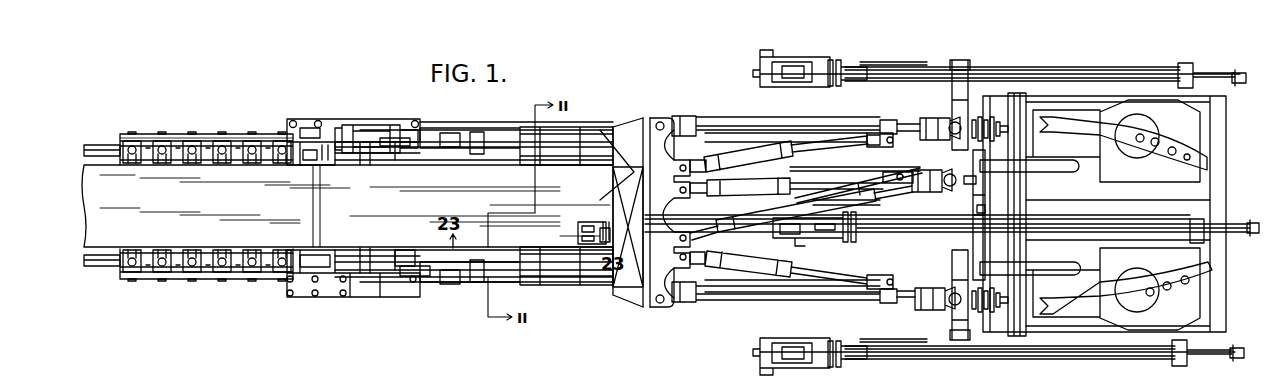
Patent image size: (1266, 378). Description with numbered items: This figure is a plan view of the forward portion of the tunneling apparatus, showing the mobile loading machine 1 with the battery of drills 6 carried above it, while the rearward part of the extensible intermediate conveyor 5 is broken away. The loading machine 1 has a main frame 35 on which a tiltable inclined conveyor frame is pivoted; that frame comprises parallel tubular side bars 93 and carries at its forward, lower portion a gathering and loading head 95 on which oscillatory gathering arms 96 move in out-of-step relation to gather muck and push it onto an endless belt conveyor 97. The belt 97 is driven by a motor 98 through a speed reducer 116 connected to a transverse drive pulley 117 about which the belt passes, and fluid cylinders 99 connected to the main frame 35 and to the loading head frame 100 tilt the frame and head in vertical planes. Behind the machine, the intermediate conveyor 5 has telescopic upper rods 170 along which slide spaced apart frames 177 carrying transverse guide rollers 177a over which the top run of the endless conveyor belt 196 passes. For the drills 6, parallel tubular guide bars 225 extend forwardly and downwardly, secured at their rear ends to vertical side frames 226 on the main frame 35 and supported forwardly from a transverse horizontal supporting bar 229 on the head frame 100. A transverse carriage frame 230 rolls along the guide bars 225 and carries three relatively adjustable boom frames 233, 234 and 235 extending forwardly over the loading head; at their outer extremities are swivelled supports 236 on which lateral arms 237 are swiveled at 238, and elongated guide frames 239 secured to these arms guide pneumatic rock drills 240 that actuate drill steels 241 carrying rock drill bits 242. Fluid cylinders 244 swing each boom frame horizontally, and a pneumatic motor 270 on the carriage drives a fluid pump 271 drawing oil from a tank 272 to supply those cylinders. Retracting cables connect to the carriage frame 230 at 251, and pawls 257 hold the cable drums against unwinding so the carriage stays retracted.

The mobile loading machine 1 is at (633, 123).
The extensible intermediate conveyor 5 is at (205, 126).
The battery of drills 6 is at (1020, 62).
The main frame 35 is at (272, 286).
The tubular side members or side bars 93 is at (432, 257).
The gathering and loading head 95 is at (1218, 193).
The oscillatory gathering arms 96 is at (1167, 144).
The endless belt conveyor 97 is at (396, 256).
The motor 98 is at (372, 128).
The fluid cylinders 99 is at (808, 134).
The loading head frame 100 is at (1064, 100).
The speed reducer 116 is at (325, 150).
The transverse drive pulley 117 is at (318, 158).
The upper telescopic tubular side members or rods 170 is at (95, 264).
The spaced apart frames 177 is at (268, 273).
The transverse guide rollers 177a is at (252, 143).
The endless conveyor belt 196 is at (86, 215).
The tubular guide members or bars 225 is at (480, 140).
The vertical side frames 226 is at (452, 135).
The transverse horizontal supporting bar 229 is at (1022, 308).
The transverse carriage frame 230 is at (636, 292).
The boom frame 233 is at (728, 118).
The boom frame 234 is at (746, 227).
The boom frame 235 is at (817, 298).
The supports 236 is at (928, 127).
The lateral arms 237 is at (955, 96).
The swivel 238 is at (988, 122).
The elongated guide frames 239 is at (1133, 76).
The pneumatic rock drills 240 is at (812, 68).
The drill steels 241 is at (1205, 80).
The rock drill bits 242 is at (1240, 73).
The fluid cylinders 244 is at (762, 152).
The cable connection 251 is at (521, 135).
The pawls 257 is at (1012, 207).
The pneumatic motor 270 is at (577, 233).
The fluid pump 271 is at (604, 222).
The tank 272 is at (626, 166).